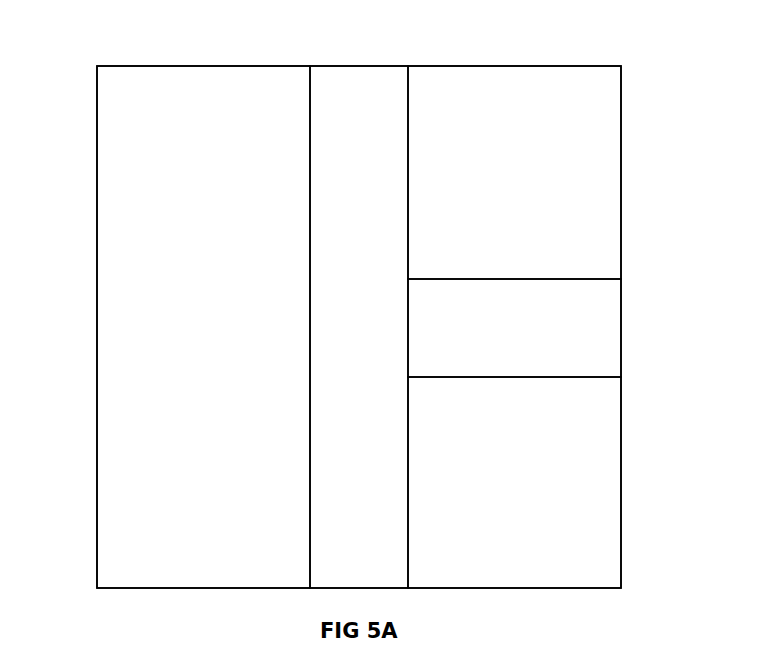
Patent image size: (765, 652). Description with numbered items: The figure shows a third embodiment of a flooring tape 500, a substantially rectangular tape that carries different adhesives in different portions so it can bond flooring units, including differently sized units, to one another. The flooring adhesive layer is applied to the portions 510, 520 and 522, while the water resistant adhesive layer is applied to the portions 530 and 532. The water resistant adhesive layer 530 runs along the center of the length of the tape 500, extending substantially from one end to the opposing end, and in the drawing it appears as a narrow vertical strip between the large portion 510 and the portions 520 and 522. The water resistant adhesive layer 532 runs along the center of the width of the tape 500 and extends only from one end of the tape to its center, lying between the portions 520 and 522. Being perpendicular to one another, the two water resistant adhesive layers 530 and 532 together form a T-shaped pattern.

The flooring tape 500 is at (109, 40).
The portion 510 is at (223, 83).
The water resistant adhesive layer 530 is at (372, 83).
The portion 520 is at (603, 198).
The water resistant adhesive layer 532 is at (604, 345).
The portion 522 is at (596, 508).